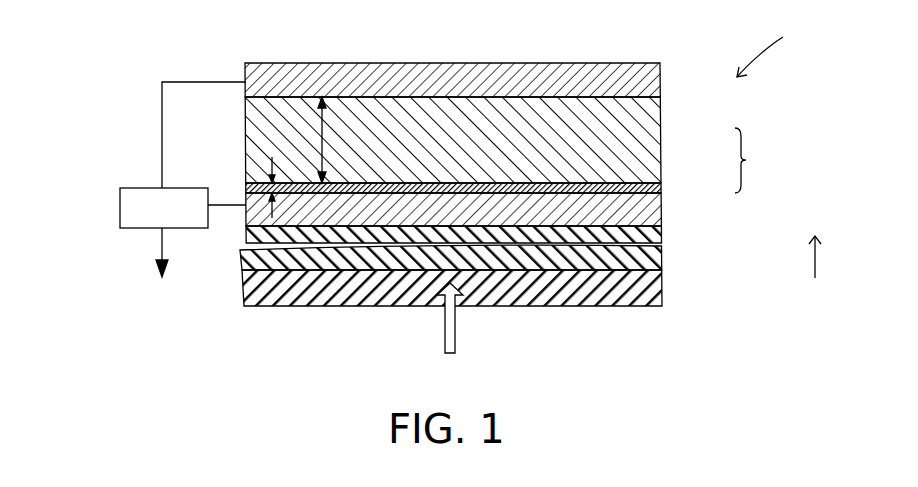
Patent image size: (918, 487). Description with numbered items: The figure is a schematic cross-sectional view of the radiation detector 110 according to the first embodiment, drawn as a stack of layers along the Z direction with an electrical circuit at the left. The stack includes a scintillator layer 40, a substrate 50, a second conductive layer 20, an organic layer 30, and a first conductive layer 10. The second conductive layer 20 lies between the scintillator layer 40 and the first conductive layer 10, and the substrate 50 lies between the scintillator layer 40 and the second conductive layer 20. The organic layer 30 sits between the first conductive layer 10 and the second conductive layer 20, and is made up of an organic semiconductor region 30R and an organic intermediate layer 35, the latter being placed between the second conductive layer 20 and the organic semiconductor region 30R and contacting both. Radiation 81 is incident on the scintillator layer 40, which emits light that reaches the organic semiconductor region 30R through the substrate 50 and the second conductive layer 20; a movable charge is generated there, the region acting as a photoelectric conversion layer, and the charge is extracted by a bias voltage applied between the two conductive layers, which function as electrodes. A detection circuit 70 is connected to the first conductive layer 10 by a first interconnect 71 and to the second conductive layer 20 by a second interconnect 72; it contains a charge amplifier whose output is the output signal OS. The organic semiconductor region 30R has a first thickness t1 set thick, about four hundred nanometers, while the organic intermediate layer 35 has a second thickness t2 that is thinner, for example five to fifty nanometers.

The radiation detector 110 is at (775, 44).
The first conductive layer 10 is at (640, 88).
The organic semiconductor region 30R is at (640, 140).
The organic layer 30 is at (756, 160).
The organic intermediate layer 35 is at (655, 188).
The second conductive layer 20 is at (640, 212).
The substrate 50 is at (640, 256).
The scintillator layer 40 is at (640, 284).
The radiation 81 is at (455, 330).
The first thickness t1 is at (320, 139).
The second thickness t2 is at (268, 182).
The detection circuit 70 is at (136, 188).
The first interconnect 71 is at (160, 103).
The second interconnect 72 is at (226, 207).
The output signal OS is at (160, 245).
The Z direction Z is at (815, 245).